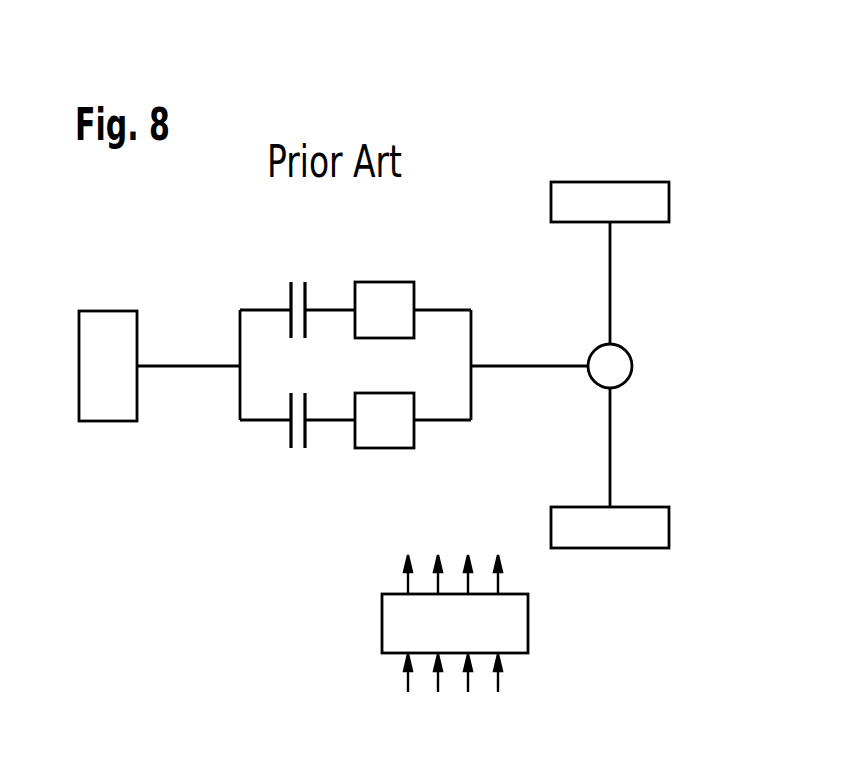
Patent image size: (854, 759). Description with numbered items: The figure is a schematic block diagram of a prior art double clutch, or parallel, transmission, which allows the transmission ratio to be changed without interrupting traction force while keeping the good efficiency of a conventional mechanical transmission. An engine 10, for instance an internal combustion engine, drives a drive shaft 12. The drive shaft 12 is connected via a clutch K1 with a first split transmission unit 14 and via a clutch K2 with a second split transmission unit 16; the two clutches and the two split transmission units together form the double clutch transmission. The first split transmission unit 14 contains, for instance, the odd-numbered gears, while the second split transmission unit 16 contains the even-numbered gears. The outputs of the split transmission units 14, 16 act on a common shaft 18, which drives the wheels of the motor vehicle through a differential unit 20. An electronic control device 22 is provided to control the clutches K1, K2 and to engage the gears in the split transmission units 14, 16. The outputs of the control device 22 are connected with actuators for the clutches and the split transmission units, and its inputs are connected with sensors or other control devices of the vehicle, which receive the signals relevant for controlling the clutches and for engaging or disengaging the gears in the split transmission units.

The engine 10 is at (108, 325).
The drive shaft 12 is at (186, 365).
The clutch K1 is at (296, 282).
The first split transmission unit 14 is at (386, 295).
The clutch K2 is at (297, 437).
The second split transmission unit 16 is at (380, 436).
The common shaft 18 is at (522, 364).
The differential unit 20 is at (617, 364).
The electronic control device 22 is at (511, 625).